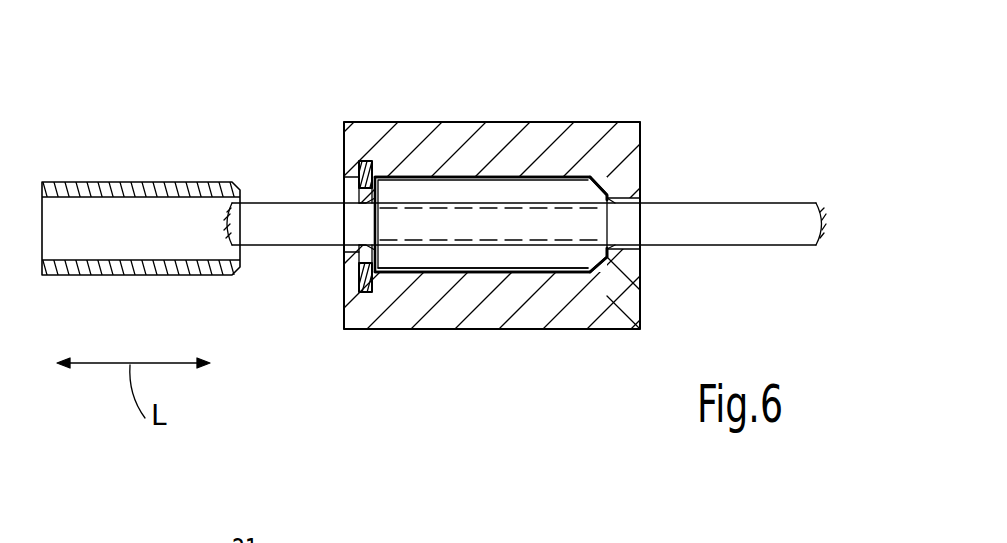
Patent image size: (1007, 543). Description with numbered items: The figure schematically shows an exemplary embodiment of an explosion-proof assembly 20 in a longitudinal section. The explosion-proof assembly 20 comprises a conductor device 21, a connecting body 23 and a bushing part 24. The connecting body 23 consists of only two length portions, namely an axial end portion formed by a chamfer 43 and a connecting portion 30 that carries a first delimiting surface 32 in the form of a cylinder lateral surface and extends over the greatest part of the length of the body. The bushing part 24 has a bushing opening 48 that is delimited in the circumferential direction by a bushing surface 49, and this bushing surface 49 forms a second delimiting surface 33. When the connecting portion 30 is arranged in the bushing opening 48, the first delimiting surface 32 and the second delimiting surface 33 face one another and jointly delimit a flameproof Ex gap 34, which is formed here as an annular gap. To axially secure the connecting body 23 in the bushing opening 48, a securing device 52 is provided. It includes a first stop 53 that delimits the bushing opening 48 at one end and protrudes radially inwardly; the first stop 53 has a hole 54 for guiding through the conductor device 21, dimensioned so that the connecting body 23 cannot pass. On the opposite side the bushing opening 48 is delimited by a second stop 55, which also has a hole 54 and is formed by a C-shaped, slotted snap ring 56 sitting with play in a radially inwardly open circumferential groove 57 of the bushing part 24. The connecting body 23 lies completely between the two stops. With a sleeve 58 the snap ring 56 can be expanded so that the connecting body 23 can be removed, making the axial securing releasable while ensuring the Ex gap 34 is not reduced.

The explosion-proof assembly 20 is at (760, 70).
The conductor device 21 is at (300, 202).
The connecting body 23 is at (425, 258).
The bushing part 24 is at (558, 130).
The connecting portion 30 is at (502, 196).
The first delimiting surface 32 is at (466, 168).
The second delimiting surface 33 is at (574, 330).
The Ex gap 34 is at (484, 258).
The chamfer 43 is at (620, 275).
The bushing opening 48 is at (600, 173).
The bushing surface 49 is at (518, 263).
The securing device 52 is at (326, 132).
The first stop 53 is at (625, 261).
The hole 54 is at (645, 198).
The second stop 55 is at (317, 308).
The snap ring 56 is at (360, 275).
The circumferential groove 57 is at (365, 160).
The sleeve 58 is at (130, 181).